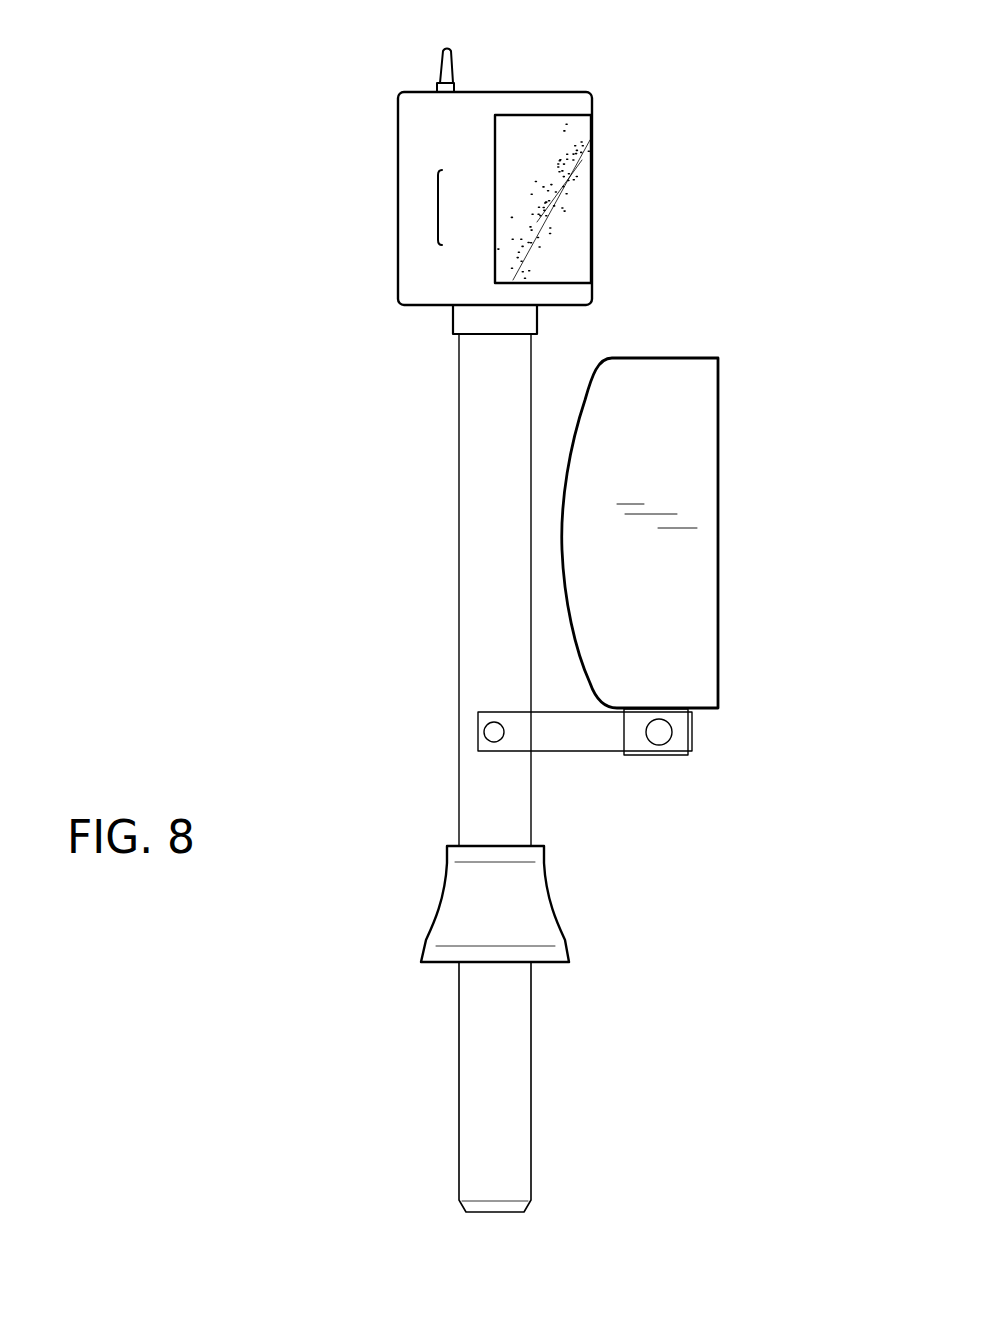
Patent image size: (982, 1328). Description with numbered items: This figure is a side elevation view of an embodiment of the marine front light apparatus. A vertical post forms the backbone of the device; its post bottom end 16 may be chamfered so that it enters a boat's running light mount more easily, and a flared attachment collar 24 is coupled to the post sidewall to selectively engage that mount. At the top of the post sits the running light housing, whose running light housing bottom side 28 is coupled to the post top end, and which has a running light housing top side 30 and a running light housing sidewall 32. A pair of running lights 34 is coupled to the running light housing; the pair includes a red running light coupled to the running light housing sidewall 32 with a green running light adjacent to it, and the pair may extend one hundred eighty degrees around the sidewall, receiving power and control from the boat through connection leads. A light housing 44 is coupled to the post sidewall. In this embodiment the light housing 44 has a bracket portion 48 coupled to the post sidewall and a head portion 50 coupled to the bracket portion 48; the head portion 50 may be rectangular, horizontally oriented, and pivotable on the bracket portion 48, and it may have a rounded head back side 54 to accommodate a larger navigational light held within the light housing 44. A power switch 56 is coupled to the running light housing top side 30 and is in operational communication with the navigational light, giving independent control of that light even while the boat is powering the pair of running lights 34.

The post bottom end 16 is at (493, 1212).
The attachment collar 24 is at (533, 913).
The running light housing bottom side 28 is at (560, 305).
The running light housing top side 30 is at (513, 92).
The running light housing sidewall 32 is at (438, 207).
The pair of running lights 34 is at (568, 213).
The light housing 44 is at (718, 425).
The bracket portion 48 is at (595, 733).
The head portion 50 is at (675, 593).
The rounded head back side 54 is at (567, 580).
The power switch 56 is at (442, 72).